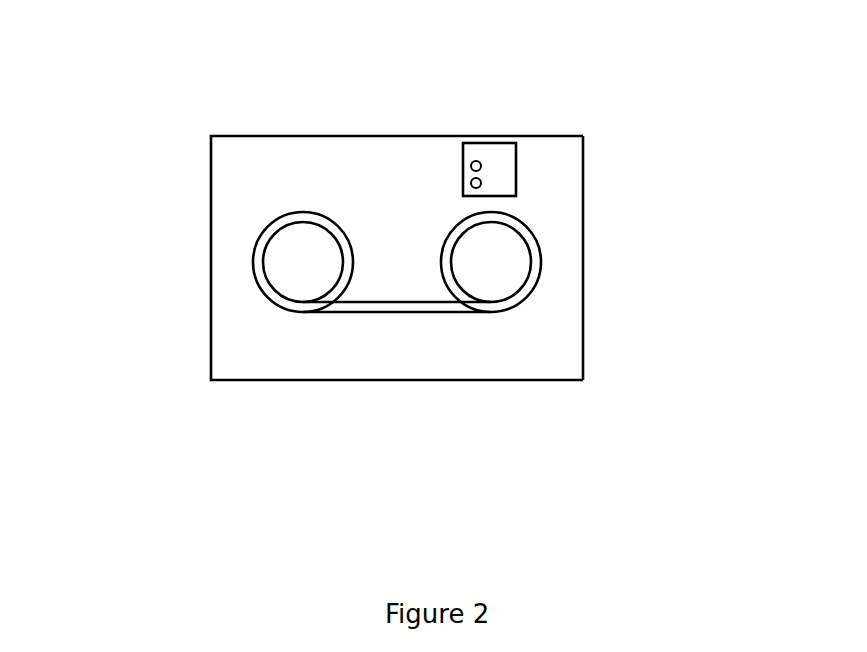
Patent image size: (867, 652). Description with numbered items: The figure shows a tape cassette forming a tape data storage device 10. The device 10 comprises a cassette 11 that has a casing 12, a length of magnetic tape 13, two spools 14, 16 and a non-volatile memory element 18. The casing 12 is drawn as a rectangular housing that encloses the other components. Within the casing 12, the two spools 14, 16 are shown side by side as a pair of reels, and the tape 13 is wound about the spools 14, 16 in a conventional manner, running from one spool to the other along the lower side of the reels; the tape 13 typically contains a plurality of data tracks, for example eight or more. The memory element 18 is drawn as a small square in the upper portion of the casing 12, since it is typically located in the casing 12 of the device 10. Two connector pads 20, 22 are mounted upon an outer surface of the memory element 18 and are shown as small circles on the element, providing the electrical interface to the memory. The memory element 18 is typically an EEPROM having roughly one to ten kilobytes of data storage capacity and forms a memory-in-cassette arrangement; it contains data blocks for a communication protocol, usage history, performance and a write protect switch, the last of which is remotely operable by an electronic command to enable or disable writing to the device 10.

The tape data storage device 10 is at (402, 266).
The cassette 11 is at (253, 184).
The casing 12 is at (584, 332).
The magnetic tape 13 is at (378, 303).
The spool 14 is at (300, 268).
The spool 16 is at (490, 275).
The memory element 18 is at (513, 137).
The connector pad 20 is at (470, 162).
The connector pad 22 is at (465, 181).